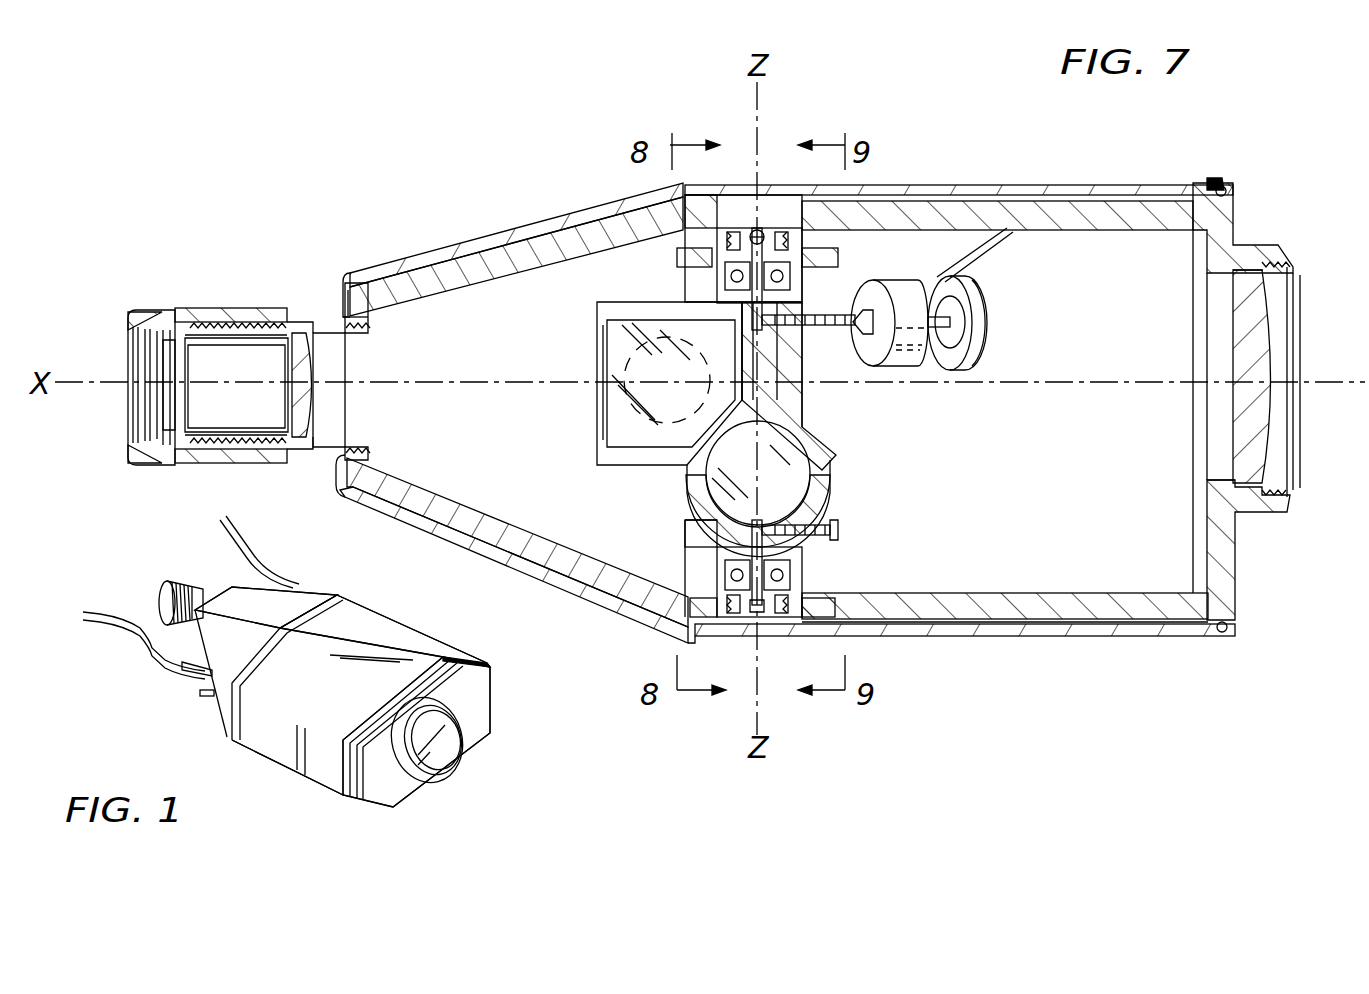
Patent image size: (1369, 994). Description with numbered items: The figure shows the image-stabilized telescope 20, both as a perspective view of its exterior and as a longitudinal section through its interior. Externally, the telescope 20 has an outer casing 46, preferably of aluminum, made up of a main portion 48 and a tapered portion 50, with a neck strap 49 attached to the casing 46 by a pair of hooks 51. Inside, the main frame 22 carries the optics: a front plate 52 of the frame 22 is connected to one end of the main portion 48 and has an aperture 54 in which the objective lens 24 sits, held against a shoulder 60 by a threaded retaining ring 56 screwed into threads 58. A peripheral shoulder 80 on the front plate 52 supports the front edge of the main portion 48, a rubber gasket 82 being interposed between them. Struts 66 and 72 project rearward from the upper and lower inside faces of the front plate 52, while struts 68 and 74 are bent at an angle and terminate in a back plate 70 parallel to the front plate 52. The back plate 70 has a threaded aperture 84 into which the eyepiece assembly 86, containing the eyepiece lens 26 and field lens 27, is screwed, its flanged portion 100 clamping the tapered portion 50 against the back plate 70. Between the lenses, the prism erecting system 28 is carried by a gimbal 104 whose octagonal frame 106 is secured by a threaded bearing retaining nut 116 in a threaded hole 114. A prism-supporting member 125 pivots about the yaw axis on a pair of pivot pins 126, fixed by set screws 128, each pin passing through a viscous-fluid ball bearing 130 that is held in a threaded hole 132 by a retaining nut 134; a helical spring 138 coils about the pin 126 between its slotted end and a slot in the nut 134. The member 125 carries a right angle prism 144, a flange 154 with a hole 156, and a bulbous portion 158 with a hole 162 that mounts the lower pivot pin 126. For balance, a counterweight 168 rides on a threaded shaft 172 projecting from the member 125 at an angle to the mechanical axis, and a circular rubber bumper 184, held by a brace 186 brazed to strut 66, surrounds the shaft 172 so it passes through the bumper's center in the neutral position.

In FIG. 1, the image-stabilized telescope 20 is at (480, 641).
In FIG. 7, the support housing (main frame) 22 is at (1140, 240).
In FIG. 7, the objective lens 24 is at (1262, 440).
In FIG. 1, the objective lens 24 is at (447, 727).
In FIG. 7, the eyepiece lens 26 is at (172, 377).
In FIG. 7, the field lens 27 is at (293, 390).
In FIG. 7, the stabilized image erection system (prism erecting system) 28 is at (643, 300).
In FIG. 7, the outer casing 46 is at (962, 185).
In FIG. 1, the outer casing 46 is at (332, 618).
In FIG. 7, the main portion of casing 48 is at (1030, 185).
In FIG. 1, the main portion of casing 48 is at (322, 773).
In FIG. 1, the neck strap 49 is at (145, 668).
In FIG. 7, the tapered portion of casing 50 is at (462, 250).
In FIG. 1, the tapered portion of casing 50 is at (276, 600).
In FIG. 1, the hooks 51 is at (207, 697).
In FIG. 7, the front plate 52 is at (1230, 552).
In FIG. 1, the front plate 52 is at (407, 783).
In FIG. 7, the aperture 54 is at (1208, 480).
In FIG. 7, the threaded retaining ring 56 is at (1290, 270).
In FIG. 7, the threads 58 is at (1290, 500).
In FIG. 7, the shoulder 60 is at (1235, 285).
In FIG. 7, the strut 66 is at (1080, 212).
In FIG. 7, the strut 68 is at (432, 292).
In FIG. 7, the back plate 70 is at (372, 316).
In FIG. 7, the strut 72 is at (1008, 593).
In FIG. 7, the strut 74 is at (520, 530).
In FIG. 7, the shoulder 80 is at (1230, 195).
In FIG. 7, the rubber gasket 82 is at (1215, 180).
In FIG. 7, the threaded aperture (threaded ring) 84 is at (362, 332).
In FIG. 7, the eyepiece assembly 86 is at (190, 478).
In FIG. 1, the eyepiece assembly 86 is at (166, 590).
In FIG. 7, the flanged portion 100 is at (366, 456).
In FIG. 7, the gimbal means 104 is at (717, 555).
In FIG. 7, the frame 106 is at (727, 285).
In FIG. 7, the threaded hole 114 is at (780, 617).
In FIG. 7, the threaded bearing retaining nut 116 is at (740, 617).
In FIG. 7, the prism-supporting member 125 is at (600, 410).
In FIG. 7, the pivot pins 126 is at (730, 232).
In FIG. 7, the set screws 128 is at (800, 330).
In FIG. 7, the ball bearing 130 is at (780, 270).
In FIG. 7, the threaded hole 132 is at (844, 245).
In FIG. 7, the threaded ball bearing retaining nut 134 is at (790, 232).
In FIG. 7, the helical spring 138 is at (762, 230).
In FIG. 7, the right angle prism 144 is at (603, 432).
In FIG. 7, the second flange 154 is at (618, 465).
In FIG. 7, the hole 156 is at (607, 350).
In FIG. 7, the bulbous portion 158 is at (822, 468).
In FIG. 7, the hole 162 is at (788, 442).
In FIG. 7, the counterweight 168 is at (900, 290).
In FIG. 7, the threaded shaft 172 is at (960, 328).
In FIG. 7, the circular rubber bumper 184 is at (978, 290).
In FIG. 7, the brace 186 is at (1000, 246).